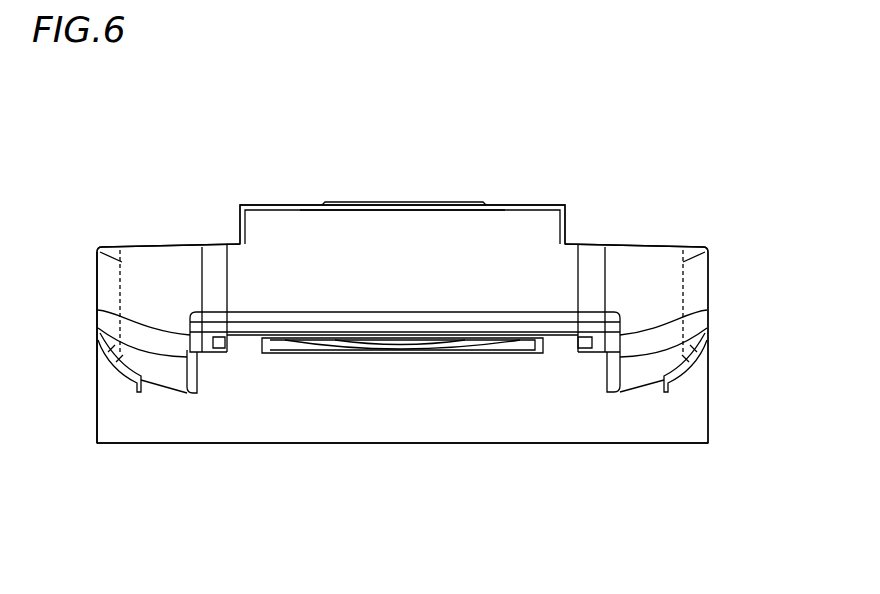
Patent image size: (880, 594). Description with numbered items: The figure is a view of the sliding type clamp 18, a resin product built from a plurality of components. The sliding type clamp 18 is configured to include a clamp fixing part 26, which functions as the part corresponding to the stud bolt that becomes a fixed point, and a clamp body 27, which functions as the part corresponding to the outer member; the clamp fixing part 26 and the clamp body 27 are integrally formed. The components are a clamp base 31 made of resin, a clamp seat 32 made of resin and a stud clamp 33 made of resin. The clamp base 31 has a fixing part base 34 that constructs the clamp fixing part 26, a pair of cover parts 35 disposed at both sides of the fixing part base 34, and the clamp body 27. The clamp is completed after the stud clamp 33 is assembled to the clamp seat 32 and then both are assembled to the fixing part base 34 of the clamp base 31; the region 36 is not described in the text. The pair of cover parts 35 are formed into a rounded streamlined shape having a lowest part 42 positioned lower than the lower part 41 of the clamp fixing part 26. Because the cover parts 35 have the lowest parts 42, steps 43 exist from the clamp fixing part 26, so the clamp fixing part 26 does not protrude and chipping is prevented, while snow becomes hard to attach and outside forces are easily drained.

The sliding type clamp 18 is at (603, 145).
The clamp fixing part 26 is at (530, 232).
The clamp body 27 is at (675, 422).
The clamp base 31 is at (647, 432).
The clamp seat 32 is at (310, 240).
The stud clamp 33 is at (397, 200).
The fixing part base 34 is at (263, 237).
The cover parts 35 is at (140, 307).
The outer wall 36 is at (130, 432).
The lower part 41 is at (400, 356).
The lowest part 42 is at (197, 385).
The steps 43 is at (210, 358).